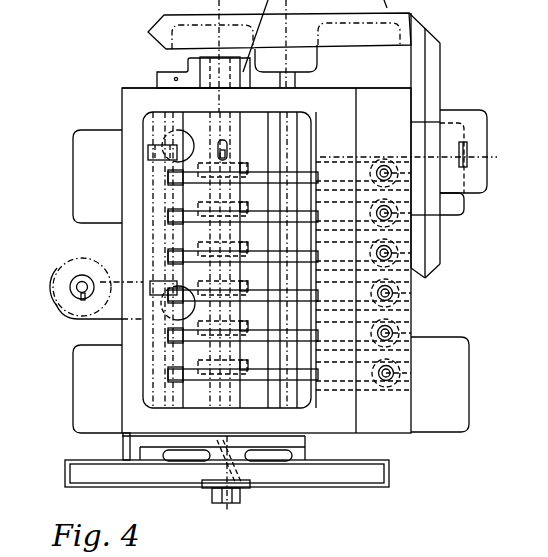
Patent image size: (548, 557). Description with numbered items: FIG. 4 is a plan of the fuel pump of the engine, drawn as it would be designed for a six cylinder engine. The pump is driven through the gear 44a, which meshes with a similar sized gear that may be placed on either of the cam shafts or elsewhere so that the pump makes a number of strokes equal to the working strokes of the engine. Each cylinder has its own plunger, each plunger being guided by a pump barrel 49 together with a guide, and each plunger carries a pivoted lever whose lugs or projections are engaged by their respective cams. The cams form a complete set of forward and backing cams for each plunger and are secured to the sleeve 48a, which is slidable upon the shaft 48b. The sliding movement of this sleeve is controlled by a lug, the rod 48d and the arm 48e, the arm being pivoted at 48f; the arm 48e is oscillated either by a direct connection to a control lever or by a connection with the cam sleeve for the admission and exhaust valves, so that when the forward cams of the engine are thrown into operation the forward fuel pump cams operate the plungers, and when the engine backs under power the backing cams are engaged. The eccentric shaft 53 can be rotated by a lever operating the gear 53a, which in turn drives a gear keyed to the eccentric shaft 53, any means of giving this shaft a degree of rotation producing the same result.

The gear 44a is at (227, 460).
The sleeve 48a is at (222, 138).
The shaft 48b is at (228, 507).
The rod 48d is at (172, 126).
The arm 48e is at (103, 320).
The pivot 48f is at (77, 266).
The pump barrel 49 is at (271, 260).
The eccentric shaft 53 is at (333, 425).
The gear 53a is at (494, 68).